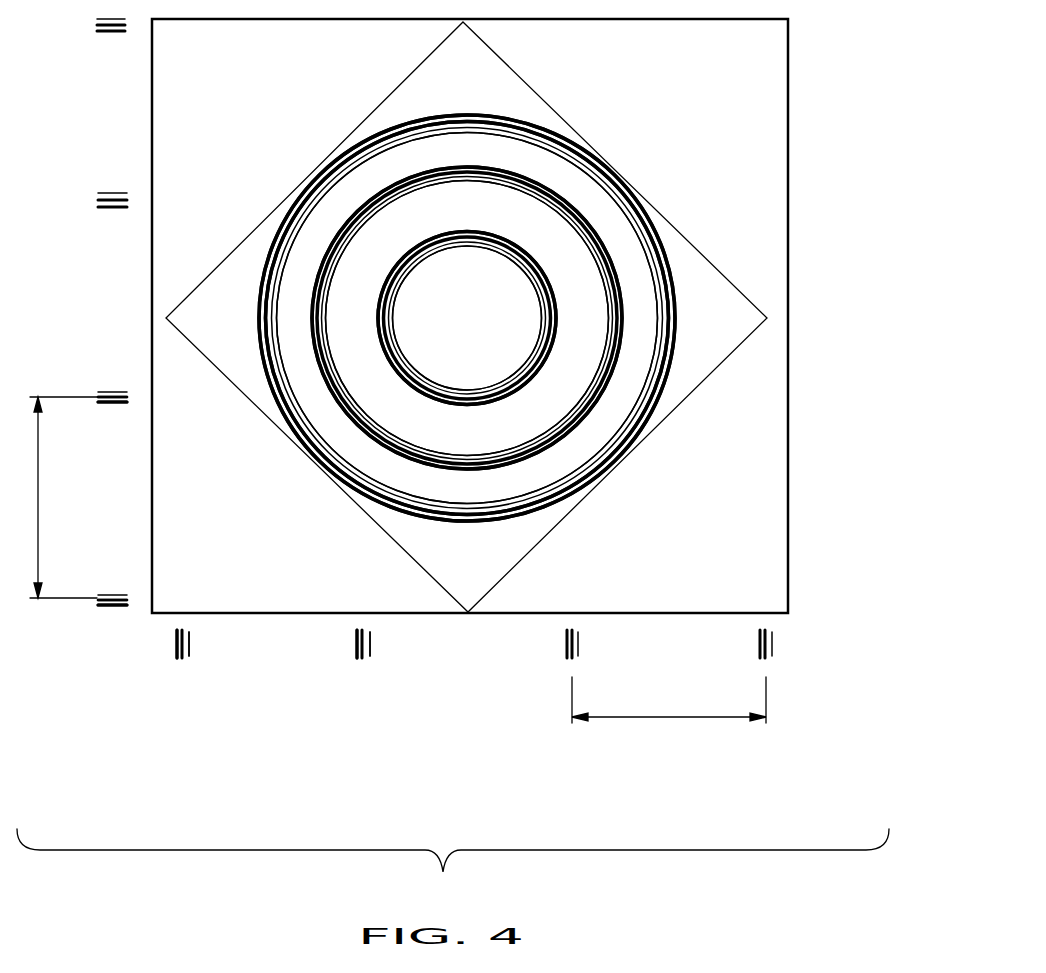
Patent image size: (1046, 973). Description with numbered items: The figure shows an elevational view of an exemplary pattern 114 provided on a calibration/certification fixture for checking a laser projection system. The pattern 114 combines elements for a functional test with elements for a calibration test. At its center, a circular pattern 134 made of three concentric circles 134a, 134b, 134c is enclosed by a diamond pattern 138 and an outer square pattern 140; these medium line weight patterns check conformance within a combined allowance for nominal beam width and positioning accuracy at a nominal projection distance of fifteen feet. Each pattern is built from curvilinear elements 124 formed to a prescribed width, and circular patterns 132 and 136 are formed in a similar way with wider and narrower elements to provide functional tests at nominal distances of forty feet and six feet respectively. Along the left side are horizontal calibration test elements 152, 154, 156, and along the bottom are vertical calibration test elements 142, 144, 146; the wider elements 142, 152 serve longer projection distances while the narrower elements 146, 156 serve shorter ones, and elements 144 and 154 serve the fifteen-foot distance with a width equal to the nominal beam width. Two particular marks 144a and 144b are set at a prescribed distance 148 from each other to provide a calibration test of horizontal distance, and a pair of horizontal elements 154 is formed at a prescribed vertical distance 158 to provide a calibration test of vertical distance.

The pattern 114 is at (250, 737).
The curvilinear elements 124 is at (502, 122).
The circular pattern 132 is at (533, 122).
The circular pattern 134 is at (552, 137).
The concentric circle 134a is at (357, 152).
The concentric circle 134b is at (380, 203).
The concentric circle 134c is at (385, 323).
The circular pattern 136 is at (603, 167).
The diamond pattern 138 is at (677, 227).
The square pattern 140 is at (788, 227).
The vertical calibration test elements 142 is at (173, 637).
The vertical calibration test elements 144 is at (177, 650).
The mark 144a is at (575, 623).
The mark 144b is at (768, 623).
The vertical calibration test elements 146 is at (190, 643).
The prescribed distance 148 is at (670, 718).
The horizontal calibration test elements 152 is at (118, 403).
The horizontal calibration test elements 154 is at (125, 405).
The horizontal calibration test elements 156 is at (117, 392).
The prescribed vertical distance 158 is at (38, 505).